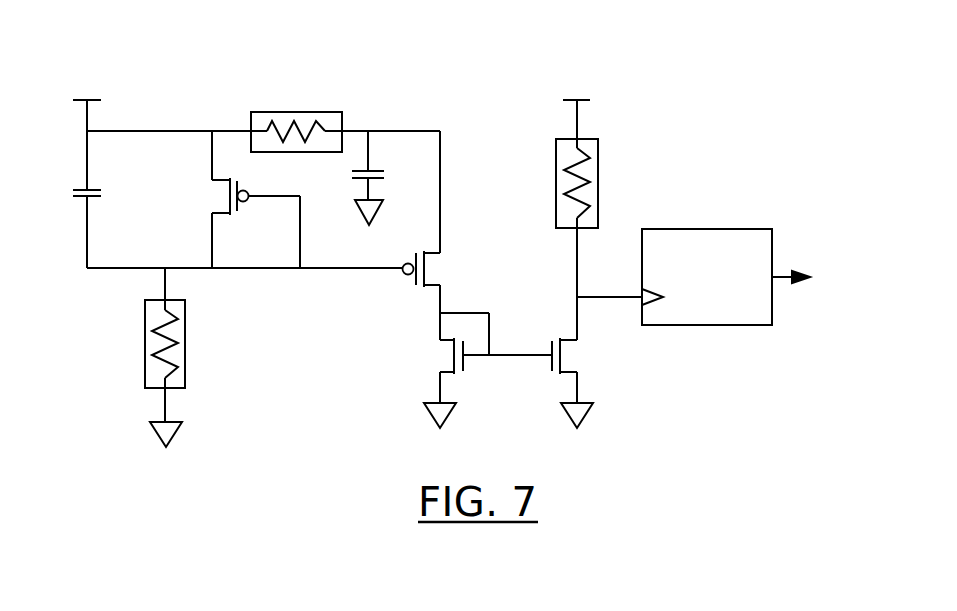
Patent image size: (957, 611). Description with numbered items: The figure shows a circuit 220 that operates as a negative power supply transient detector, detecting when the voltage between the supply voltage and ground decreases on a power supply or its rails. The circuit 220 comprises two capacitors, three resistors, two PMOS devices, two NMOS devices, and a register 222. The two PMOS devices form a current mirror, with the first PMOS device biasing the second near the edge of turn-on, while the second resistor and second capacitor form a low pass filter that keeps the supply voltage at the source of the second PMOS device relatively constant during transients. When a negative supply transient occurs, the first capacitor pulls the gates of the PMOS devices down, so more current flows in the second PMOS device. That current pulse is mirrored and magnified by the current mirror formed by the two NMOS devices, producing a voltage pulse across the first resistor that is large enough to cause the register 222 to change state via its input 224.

The circuit 220 is at (155, 50).
The register 222 is at (742, 229).
The input 224 is at (640, 294).